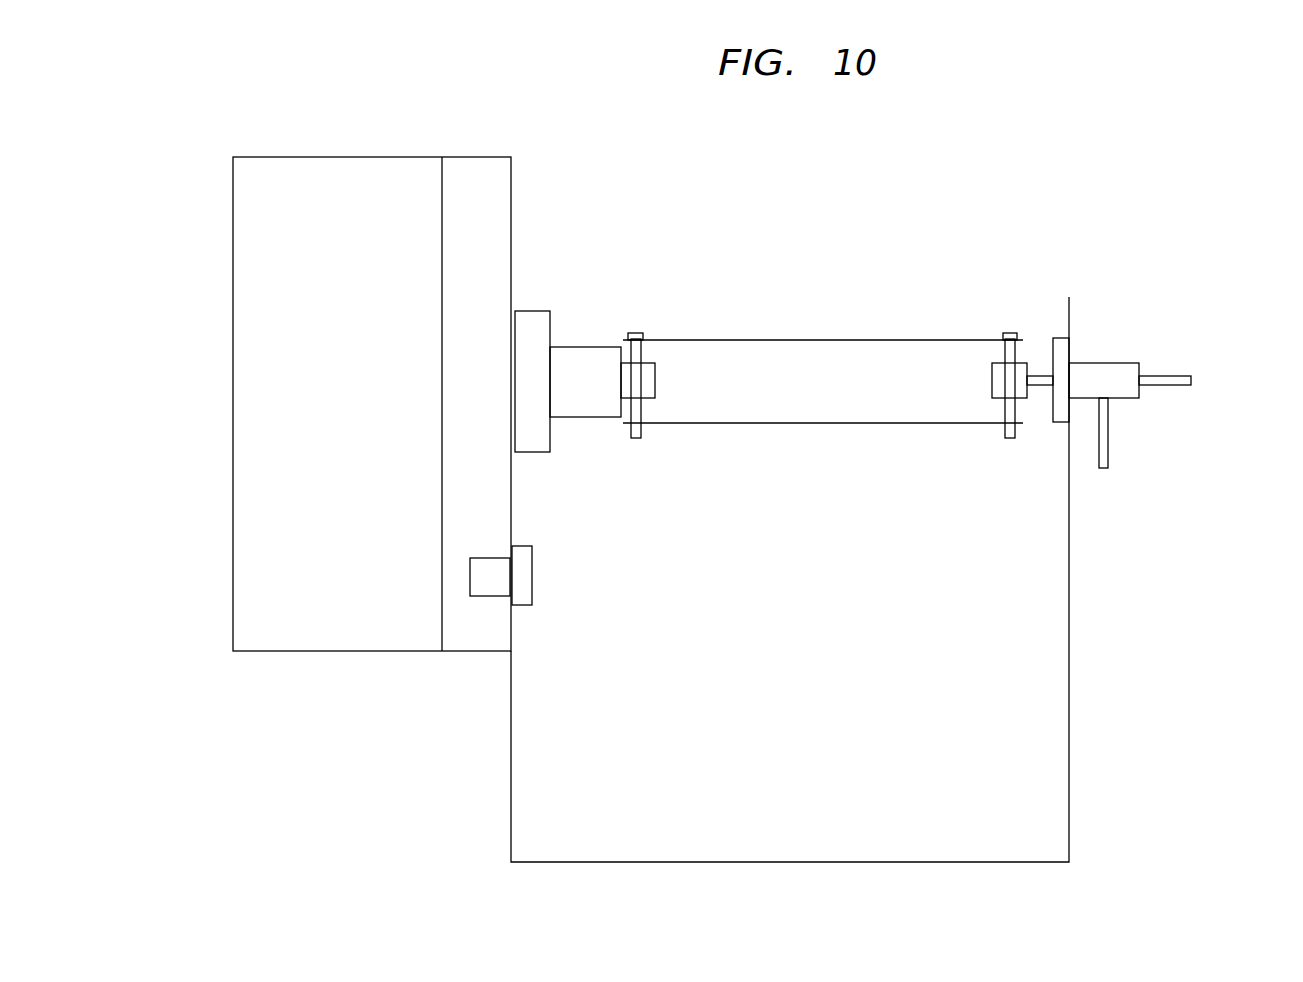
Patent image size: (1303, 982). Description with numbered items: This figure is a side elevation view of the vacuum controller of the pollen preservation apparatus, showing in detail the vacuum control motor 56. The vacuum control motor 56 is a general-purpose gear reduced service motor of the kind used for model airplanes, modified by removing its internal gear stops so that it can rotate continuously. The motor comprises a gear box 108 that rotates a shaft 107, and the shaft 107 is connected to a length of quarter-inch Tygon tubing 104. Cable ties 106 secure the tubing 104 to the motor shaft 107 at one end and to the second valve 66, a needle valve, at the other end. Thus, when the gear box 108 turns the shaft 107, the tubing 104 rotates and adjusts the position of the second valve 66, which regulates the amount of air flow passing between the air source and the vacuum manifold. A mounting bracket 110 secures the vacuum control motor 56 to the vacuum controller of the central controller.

The vacuum control motor 56 is at (1163, 259).
The second valve 66 is at (1140, 416).
The tubing 104 is at (792, 423).
The cable ties 106 is at (635, 440).
The shaft 107 is at (584, 347).
The gear box 108 is at (233, 383).
The mounting bracket 110 is at (1069, 787).